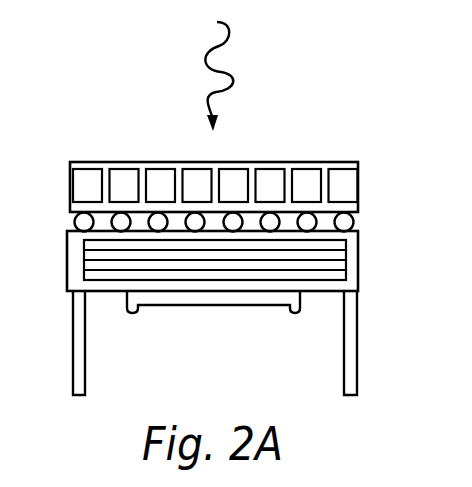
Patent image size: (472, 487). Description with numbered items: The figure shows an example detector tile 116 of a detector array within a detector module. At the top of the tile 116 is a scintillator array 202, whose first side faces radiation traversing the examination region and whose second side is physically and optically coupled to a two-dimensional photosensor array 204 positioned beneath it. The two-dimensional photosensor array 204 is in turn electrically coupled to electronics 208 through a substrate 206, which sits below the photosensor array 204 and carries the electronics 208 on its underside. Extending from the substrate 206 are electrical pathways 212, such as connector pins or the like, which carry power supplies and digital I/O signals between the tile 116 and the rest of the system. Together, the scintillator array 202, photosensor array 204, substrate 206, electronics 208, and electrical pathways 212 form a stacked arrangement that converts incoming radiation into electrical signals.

The tile 116 is at (290, 110).
The scintillator array 202 is at (130, 164).
The two-dimensional photosensor array 204 is at (338, 208).
The substrate 206 is at (307, 255).
The electronics 208 is at (220, 318).
The electrical pathways 212 is at (86, 360).